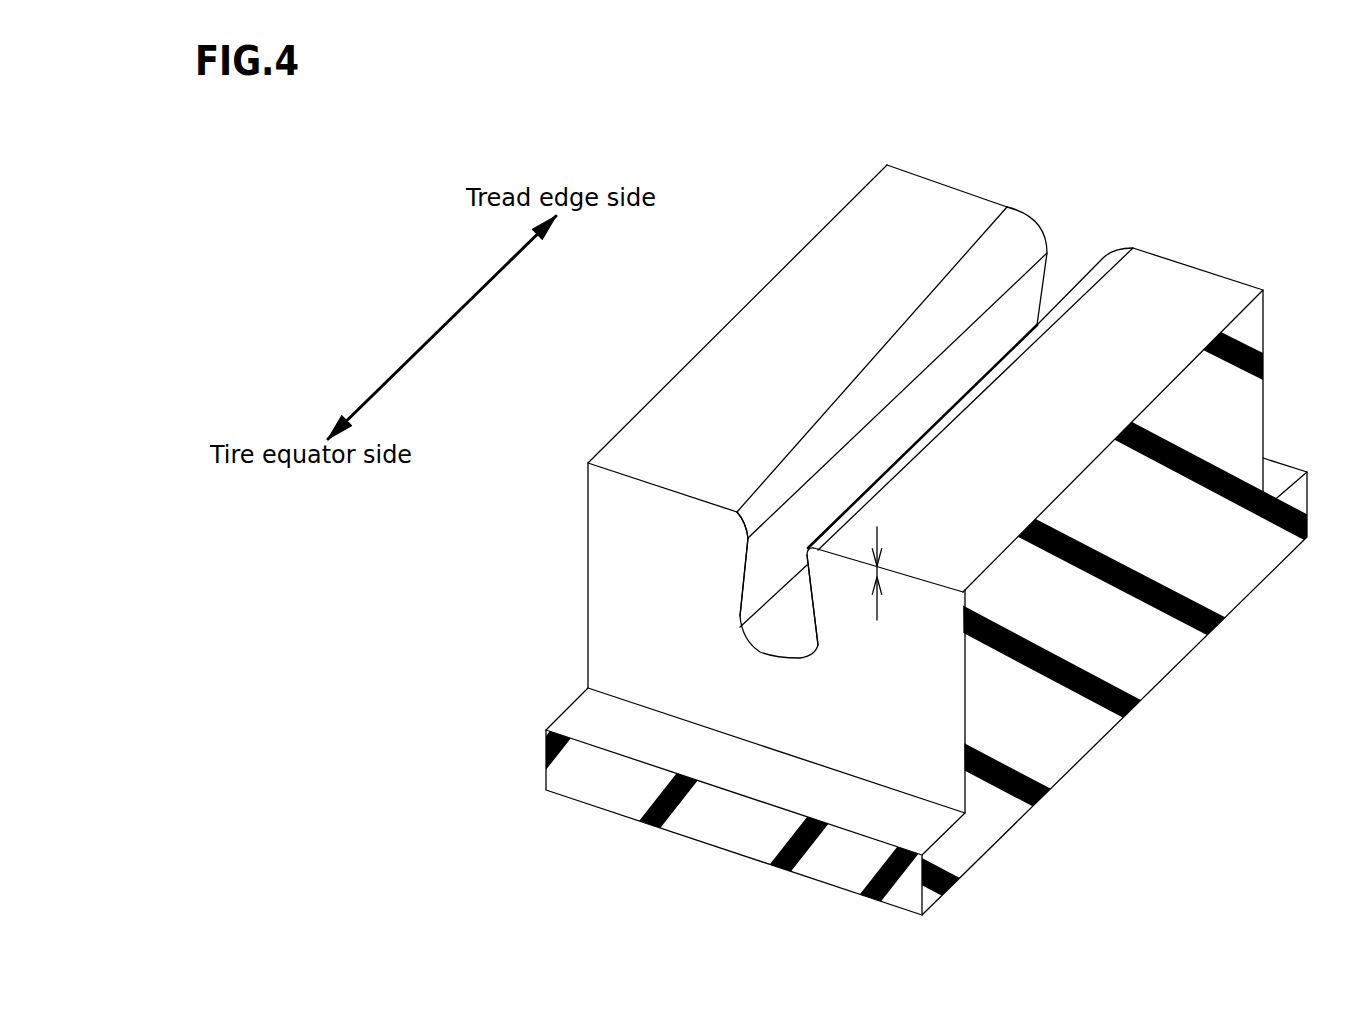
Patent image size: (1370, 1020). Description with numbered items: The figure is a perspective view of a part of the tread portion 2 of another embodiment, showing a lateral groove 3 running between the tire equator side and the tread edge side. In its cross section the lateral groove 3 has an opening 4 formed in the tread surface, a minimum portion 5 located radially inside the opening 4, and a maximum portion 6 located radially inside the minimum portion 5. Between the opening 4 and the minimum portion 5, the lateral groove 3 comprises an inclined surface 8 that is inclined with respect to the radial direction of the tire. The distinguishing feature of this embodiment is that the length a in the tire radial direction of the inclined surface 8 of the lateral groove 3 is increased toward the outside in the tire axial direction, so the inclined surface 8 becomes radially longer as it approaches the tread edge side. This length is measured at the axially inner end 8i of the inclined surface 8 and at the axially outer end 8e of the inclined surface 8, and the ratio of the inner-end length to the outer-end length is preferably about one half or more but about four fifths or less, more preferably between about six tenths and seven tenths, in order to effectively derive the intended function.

The tread portion 2 is at (1142, 152).
The lateral groove 3 is at (1067, 233).
The opening 4 is at (848, 370).
The minimum portion 5 is at (737, 540).
The maximum portion 6 is at (730, 629).
The inclined surface 8 is at (972, 285).
The axially outer end 8e is at (1098, 235).
The axially inner end 8i is at (818, 607).
The length in the tire radial direction of the inclined surface a is at (810, 558).